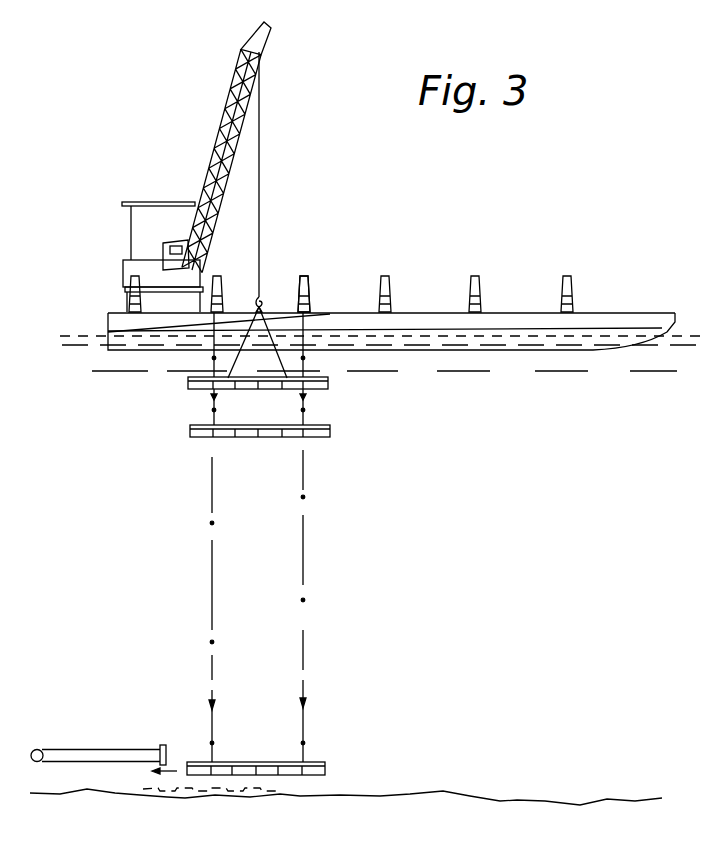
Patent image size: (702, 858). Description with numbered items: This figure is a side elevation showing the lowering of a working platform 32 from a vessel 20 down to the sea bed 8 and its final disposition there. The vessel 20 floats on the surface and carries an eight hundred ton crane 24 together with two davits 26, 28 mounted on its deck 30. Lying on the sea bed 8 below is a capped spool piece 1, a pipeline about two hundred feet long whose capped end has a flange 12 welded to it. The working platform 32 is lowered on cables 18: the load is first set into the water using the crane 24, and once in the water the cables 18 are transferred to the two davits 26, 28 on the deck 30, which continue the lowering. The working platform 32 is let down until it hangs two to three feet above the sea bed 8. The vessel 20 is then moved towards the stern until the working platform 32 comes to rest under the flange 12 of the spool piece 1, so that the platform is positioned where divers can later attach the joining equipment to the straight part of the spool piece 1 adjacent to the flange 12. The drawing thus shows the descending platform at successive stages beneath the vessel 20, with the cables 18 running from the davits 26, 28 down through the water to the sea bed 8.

The capped spool piece 1 is at (80, 750).
The sea bed 8 is at (513, 800).
The flange 12 is at (167, 748).
The cables 18 is at (260, 182).
The vessel 20 is at (513, 320).
The crane 24 is at (237, 127).
The davit 26 is at (217, 278).
The davit 28 is at (308, 280).
The deck 30 is at (427, 312).
The working platform 32 is at (328, 382).